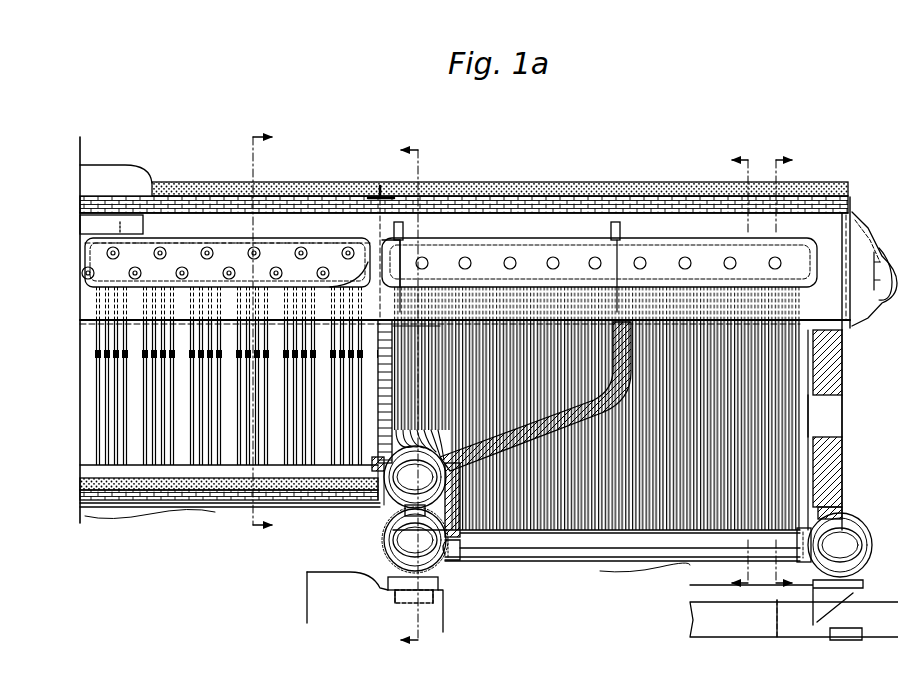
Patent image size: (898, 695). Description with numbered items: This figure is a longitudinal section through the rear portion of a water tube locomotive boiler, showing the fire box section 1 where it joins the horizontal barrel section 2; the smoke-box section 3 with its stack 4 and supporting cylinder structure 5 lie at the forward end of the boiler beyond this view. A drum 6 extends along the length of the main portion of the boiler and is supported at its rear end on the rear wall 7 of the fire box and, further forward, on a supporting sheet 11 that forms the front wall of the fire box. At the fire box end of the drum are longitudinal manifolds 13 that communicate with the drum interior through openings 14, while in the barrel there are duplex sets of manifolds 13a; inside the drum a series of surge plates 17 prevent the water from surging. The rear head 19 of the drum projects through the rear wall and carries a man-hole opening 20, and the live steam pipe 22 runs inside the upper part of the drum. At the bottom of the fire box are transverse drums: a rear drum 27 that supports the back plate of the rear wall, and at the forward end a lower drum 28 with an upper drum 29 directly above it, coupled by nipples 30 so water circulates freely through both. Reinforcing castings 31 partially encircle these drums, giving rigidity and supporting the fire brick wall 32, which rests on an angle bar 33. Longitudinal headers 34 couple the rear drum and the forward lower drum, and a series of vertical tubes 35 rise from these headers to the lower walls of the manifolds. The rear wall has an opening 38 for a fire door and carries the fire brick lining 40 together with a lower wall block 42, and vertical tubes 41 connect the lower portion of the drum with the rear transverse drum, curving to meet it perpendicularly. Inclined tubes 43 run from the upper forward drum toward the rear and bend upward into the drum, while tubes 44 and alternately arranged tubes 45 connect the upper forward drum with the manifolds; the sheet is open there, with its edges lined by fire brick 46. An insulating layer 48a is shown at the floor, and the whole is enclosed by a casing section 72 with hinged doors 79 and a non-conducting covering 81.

The fire box section 1 is at (645, 578).
The horizontal barrel section 2 is at (150, 520).
The smoke-box section 3 is at (793, 372).
The stack 4 is at (728, 372).
The cylinder structure 5 is at (419, 399).
The drum 6 is at (516, 248).
The rear wall 7 is at (843, 348).
The supporting sheet 11 is at (389, 192).
The manifolds 13 is at (82, 253).
The manifold set 13a is at (82, 271).
The openings 14 is at (208, 248).
The surge plates 17 is at (405, 236).
The rear head 19 is at (874, 269).
The man-hole opening 20 is at (880, 292).
The live steam pipe 22 is at (80, 222).
The drum 27 is at (858, 524).
The drum 28 is at (386, 556).
The drum 29 is at (415, 477).
The nipples 30 is at (404, 504).
The reinforcing castings 31 is at (392, 533).
The fire brick wall 32 is at (462, 552).
The angle bar 33 is at (452, 564).
The longitudinal headers 34 is at (621, 547).
The vertical tubes 35 is at (776, 476).
The opening 38 is at (836, 421).
The fire brick lining 40 is at (843, 368).
The vertical tubes 41 is at (812, 416).
The lower wall block 42 is at (825, 500).
The inclined tubes 43 is at (634, 340).
The tubes 44 is at (433, 318).
The tubes 45 is at (433, 335).
The fire brick 46 is at (379, 417).
The floor insulation 48a is at (243, 478).
The casing section 72 is at (600, 190).
The doors 79 is at (640, 195).
The non-conducting covering 81 is at (692, 196).